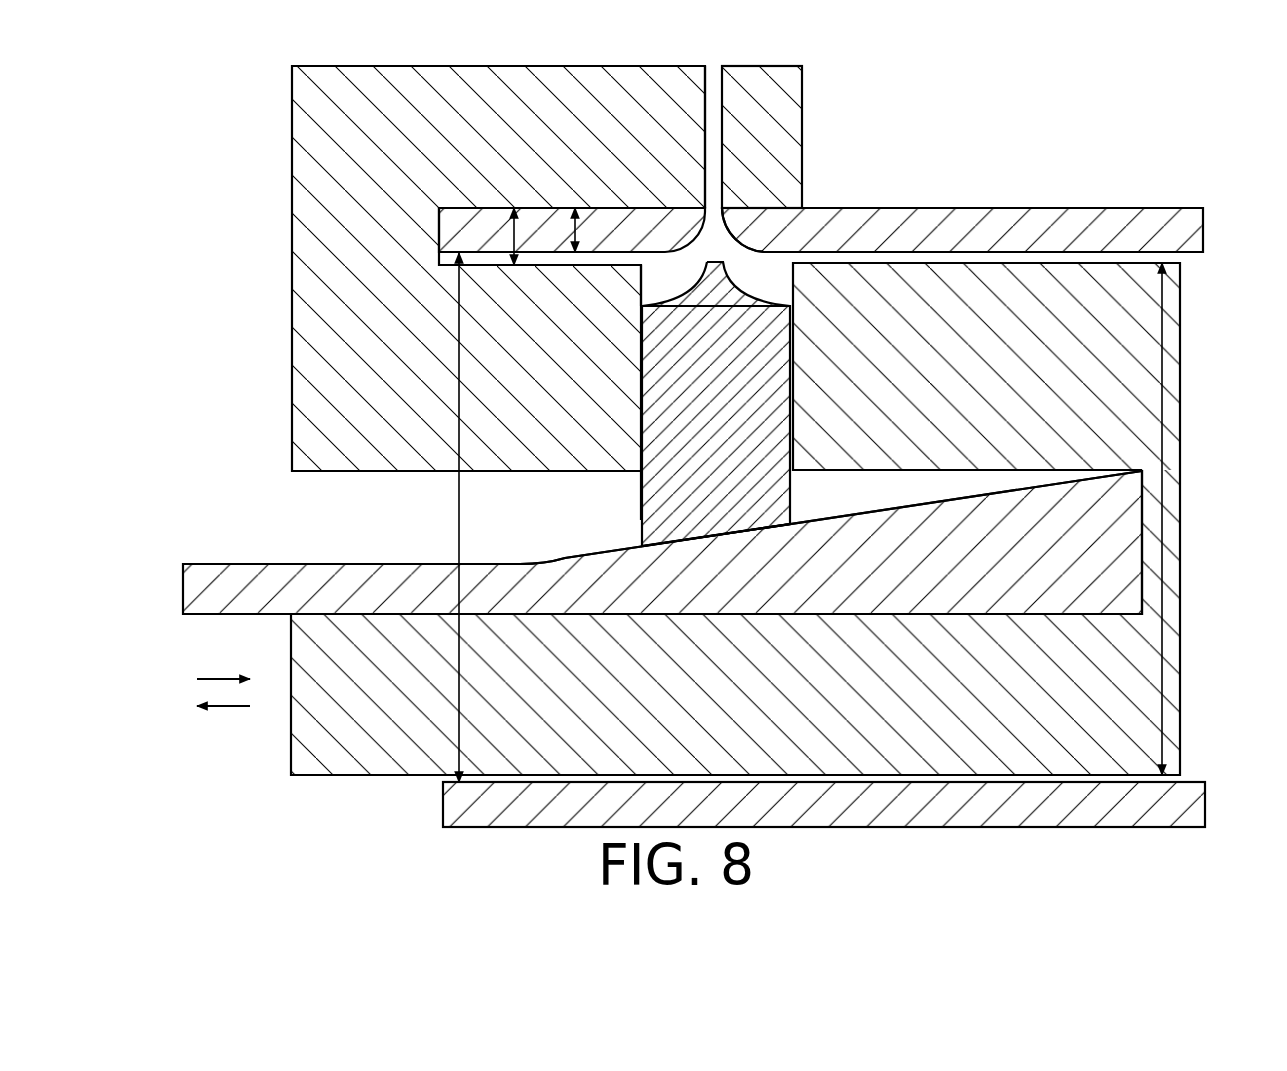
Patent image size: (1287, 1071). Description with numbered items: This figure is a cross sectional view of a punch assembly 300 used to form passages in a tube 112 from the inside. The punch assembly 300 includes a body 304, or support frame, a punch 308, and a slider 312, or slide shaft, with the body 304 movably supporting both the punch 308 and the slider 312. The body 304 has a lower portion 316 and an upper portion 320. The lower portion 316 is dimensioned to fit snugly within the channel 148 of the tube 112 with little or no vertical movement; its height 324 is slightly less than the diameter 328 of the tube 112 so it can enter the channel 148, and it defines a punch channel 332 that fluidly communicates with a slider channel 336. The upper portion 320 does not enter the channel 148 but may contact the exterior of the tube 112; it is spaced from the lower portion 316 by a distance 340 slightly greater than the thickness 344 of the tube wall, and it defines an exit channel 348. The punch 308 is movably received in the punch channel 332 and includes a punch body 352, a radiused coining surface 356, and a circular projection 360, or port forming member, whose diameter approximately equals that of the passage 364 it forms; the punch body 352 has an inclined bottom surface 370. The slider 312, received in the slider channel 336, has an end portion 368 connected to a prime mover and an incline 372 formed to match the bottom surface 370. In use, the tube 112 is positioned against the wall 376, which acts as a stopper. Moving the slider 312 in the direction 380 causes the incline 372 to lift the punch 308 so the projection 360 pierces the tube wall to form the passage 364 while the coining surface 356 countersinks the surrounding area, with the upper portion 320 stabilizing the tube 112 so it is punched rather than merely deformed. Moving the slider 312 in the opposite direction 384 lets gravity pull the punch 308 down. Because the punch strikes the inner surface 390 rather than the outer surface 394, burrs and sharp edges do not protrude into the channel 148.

The tube 112 is at (978, 208).
The channel 148 is at (1193, 573).
The punch assembly 300 is at (205, 278).
The body 304 is at (292, 398).
The punch 308 is at (641, 490).
The slider 312 is at (238, 563).
The lower portion 316 is at (1180, 389).
The upper portion 320 is at (802, 97).
The height 324 is at (1160, 360).
The diameter 328 is at (462, 368).
The punch channel 332 is at (641, 285).
The slider channel 336 is at (883, 470).
The distance 340 is at (513, 237).
The thickness 344 is at (570, 237).
The exit channel 348 is at (703, 112).
The punch body 352 is at (642, 437).
The coining surface 356 is at (672, 298).
The projection 360 is at (717, 261).
The passage 364 is at (727, 203).
The end portion 368 is at (322, 563).
The bottom surface 370 is at (677, 537).
The incline 372 is at (843, 513).
The wall 376 is at (439, 230).
The direction 380 is at (225, 710).
The direction 384 is at (220, 679).
The inner surface 390 is at (853, 255).
The outer surface 394 is at (900, 208).